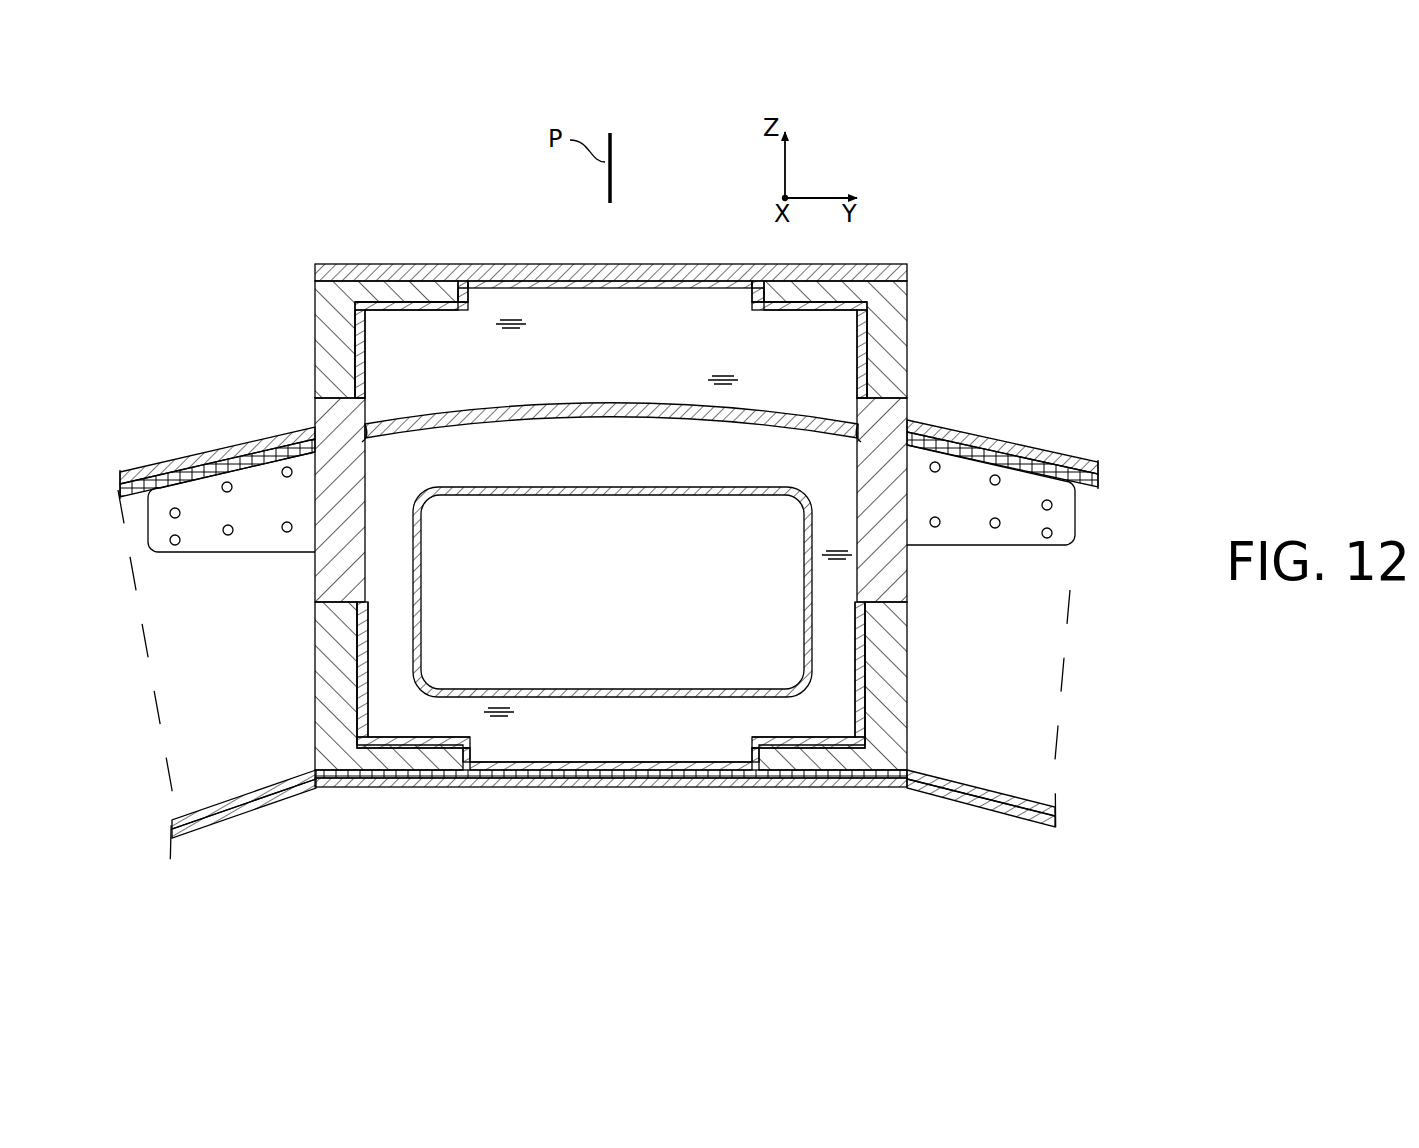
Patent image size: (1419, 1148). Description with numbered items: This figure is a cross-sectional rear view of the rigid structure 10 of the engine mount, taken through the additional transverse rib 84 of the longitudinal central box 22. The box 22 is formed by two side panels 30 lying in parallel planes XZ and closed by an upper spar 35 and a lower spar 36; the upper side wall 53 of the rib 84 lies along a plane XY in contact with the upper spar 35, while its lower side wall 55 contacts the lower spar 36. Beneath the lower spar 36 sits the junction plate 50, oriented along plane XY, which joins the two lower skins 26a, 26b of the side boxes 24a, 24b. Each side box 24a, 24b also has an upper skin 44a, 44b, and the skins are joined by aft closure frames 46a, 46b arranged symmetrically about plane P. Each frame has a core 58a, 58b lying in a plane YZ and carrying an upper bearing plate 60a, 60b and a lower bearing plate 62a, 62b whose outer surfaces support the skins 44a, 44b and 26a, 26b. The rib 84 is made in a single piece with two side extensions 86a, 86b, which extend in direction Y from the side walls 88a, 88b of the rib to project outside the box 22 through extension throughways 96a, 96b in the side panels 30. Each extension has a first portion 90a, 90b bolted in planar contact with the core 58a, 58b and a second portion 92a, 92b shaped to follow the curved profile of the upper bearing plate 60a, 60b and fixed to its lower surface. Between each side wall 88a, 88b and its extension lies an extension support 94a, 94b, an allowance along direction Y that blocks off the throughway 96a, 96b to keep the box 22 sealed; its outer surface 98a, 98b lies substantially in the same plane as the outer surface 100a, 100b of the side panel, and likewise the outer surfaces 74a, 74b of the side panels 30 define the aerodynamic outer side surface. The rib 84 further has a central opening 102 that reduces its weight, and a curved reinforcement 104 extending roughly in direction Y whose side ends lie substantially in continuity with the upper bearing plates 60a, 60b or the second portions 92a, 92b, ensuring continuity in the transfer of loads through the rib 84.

The rigid structure 10 is at (472, 242).
The longitudinal central box 22 is at (592, 262).
The side box 24a is at (160, 716).
The side box 24b is at (1070, 692).
The lower skin 26a is at (238, 806).
The lower skin 26b is at (1016, 815).
The side panel 30 is at (316, 305).
The upper spar 35 is at (368, 266).
The lower spar 36 is at (376, 788).
The upper skin 44a is at (240, 456).
The upper skin 44b is at (1005, 447).
The aft closure frame 46a is at (216, 668).
The aft closure frame 46b is at (1043, 625).
The junction plate 50 is at (650, 788).
The upper side wall 53 is at (510, 268).
The lower side wall 55 is at (553, 788).
The core 58a is at (312, 790).
The core 58b is at (1040, 740).
The upper bearing plate 60a is at (165, 480).
The upper bearing plate 60b is at (960, 430).
The lower bearing plate 62a is at (186, 824).
The lower bearing plate 62b is at (950, 782).
The outer surface of side panel 74a is at (908, 294).
The outer surface of side panel 74b is at (316, 350).
The additional rib 84 is at (650, 312).
The side extension 86a is at (215, 488).
The side extension 86b is at (1068, 522).
The side wall 88a is at (378, 352).
The side wall 88b is at (860, 355).
The first portion 90a is at (268, 540).
The first portion 90b is at (1032, 532).
The second portion 92a is at (296, 446).
The second portion 92b is at (1065, 472).
The extension support 94a is at (348, 600).
The extension support 94b is at (892, 602).
The extension throughway 96a is at (368, 440).
The extension throughway 96b is at (853, 442).
The outer surface of extension support 98a is at (318, 608).
The outer surface of extension support 98b is at (915, 425).
The outer surface of side panel 100a is at (318, 735).
The outer surface of side panel 100b is at (910, 705).
The central opening 102 is at (428, 627).
The reinforcement 104 is at (600, 412).